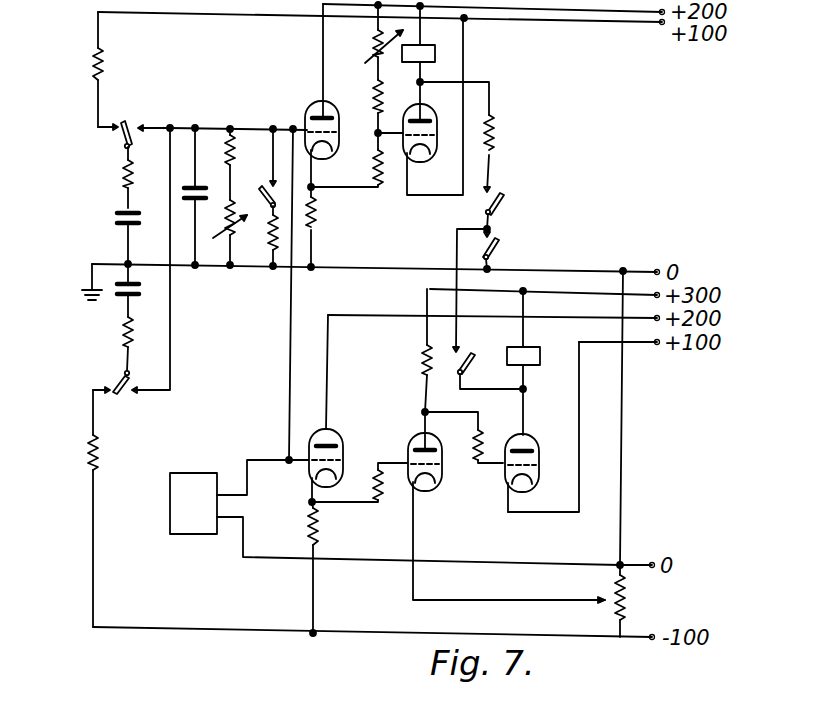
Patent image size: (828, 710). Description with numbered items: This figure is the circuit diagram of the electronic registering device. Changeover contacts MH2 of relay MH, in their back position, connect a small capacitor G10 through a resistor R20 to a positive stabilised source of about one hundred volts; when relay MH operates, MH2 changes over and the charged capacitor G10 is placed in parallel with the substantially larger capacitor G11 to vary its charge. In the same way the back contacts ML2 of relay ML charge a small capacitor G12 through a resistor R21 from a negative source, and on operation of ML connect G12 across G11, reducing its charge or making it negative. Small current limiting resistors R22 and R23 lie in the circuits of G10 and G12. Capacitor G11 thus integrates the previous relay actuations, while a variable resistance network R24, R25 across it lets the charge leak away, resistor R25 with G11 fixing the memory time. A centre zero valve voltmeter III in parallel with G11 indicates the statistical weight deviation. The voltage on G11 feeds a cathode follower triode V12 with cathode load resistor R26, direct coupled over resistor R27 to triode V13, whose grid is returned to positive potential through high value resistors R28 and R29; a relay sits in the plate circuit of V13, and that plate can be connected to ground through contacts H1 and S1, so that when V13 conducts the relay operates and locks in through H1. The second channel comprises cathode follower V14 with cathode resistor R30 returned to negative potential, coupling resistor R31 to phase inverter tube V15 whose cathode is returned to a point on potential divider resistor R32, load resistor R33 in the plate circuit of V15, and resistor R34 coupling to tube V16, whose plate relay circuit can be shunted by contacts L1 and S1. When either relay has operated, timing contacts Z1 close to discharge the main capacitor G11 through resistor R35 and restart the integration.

The resistor R20 is at (121, 69).
The changeover contacts MH2 is at (136, 117).
The current limiting resistor R22 is at (123, 184).
The small capacitor G10 is at (117, 222).
The small capacitor G12 is at (118, 297).
The current limiting resistor R23 is at (120, 334).
The changeover contacts ML2 is at (124, 398).
The resistor R21 is at (100, 463).
The integrating capacitor G11 is at (210, 198).
The variable resistance network resistor R24 is at (240, 156).
The variable resistor R25 is at (240, 246).
The relay contacts Z1 is at (265, 189).
The discharge resistor R35 is at (280, 251).
The cathode follower triode tube V12 is at (310, 117).
The high value resistor R29 is at (372, 53).
The high value resistor R28 is at (373, 93).
The coupling resistor R27 is at (386, 186).
The cathode load resistor R26 is at (315, 231).
The triode tube V13 is at (435, 119).
The relay contacts H1 is at (498, 214).
The relay contacts S1 is at (496, 249).
The relay contacts L1 is at (470, 353).
The cathode follower triode tube V14 is at (348, 445).
The load resistor R33 is at (422, 361).
The phase inverter tube V15 is at (403, 459).
The coupling resistor R31 is at (385, 491).
The coupling resistor R34 is at (472, 467).
The triode tube V16 is at (548, 441).
The cathode resistor R30 is at (308, 546).
The potential divider resistor R32 is at (640, 619).
The valve voltmeter III is at (213, 456).